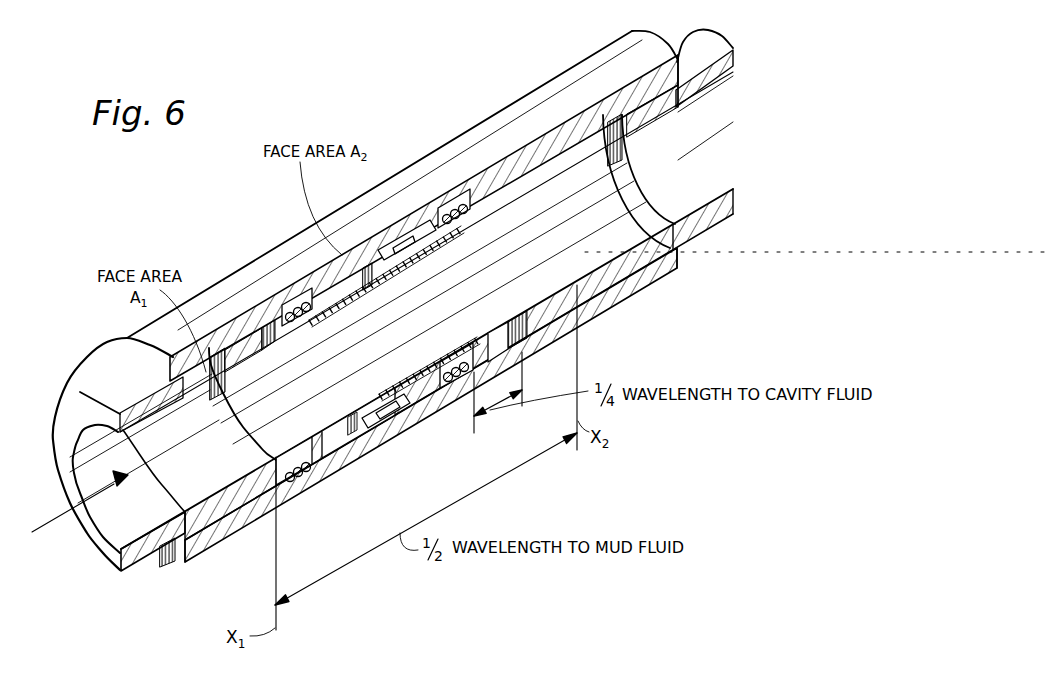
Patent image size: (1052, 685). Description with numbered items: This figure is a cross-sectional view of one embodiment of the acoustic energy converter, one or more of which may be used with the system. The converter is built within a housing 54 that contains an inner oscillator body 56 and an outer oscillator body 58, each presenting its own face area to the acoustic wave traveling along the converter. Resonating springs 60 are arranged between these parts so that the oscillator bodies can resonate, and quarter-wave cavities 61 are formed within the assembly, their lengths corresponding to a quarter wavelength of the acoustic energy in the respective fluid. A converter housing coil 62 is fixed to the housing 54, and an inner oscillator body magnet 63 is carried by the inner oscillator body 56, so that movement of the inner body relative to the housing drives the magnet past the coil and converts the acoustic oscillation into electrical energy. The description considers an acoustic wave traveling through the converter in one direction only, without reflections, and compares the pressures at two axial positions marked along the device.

The housing 54 is at (310, 237).
The inner oscillator body 56 is at (477, 215).
The outer oscillator body 58 is at (537, 336).
The resonating springs 60 is at (445, 198).
The quarter-wave cavities 61 is at (492, 325).
The converter housing coil 62 is at (380, 227).
The inner oscillator body magnet 63 is at (407, 262).